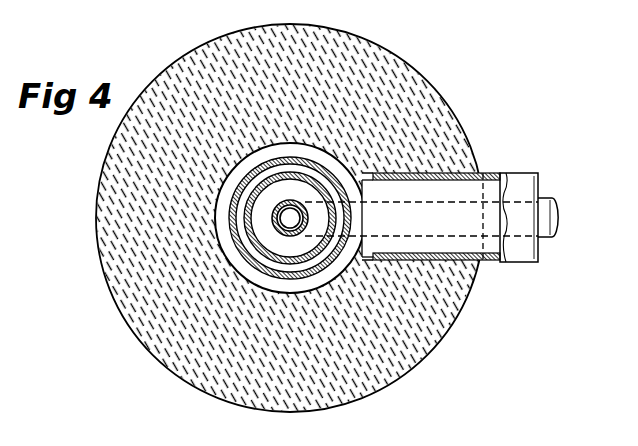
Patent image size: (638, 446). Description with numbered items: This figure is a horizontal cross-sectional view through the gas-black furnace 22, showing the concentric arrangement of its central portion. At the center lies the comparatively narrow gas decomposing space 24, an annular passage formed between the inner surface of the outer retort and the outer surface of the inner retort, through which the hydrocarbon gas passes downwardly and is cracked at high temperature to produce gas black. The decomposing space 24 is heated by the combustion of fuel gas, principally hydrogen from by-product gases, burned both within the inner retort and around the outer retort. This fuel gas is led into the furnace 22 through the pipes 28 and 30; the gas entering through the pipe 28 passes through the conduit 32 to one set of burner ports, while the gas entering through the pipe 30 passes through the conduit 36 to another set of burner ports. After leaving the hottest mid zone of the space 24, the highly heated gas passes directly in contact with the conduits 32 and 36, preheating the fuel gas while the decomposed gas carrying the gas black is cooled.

The furnace 22 is at (445, 333).
The gas decomposing space 24 is at (330, 245).
The pipe 28 is at (547, 203).
The pipe 30 is at (520, 180).
The conduit 32 is at (322, 191).
The conduit 36 is at (428, 178).